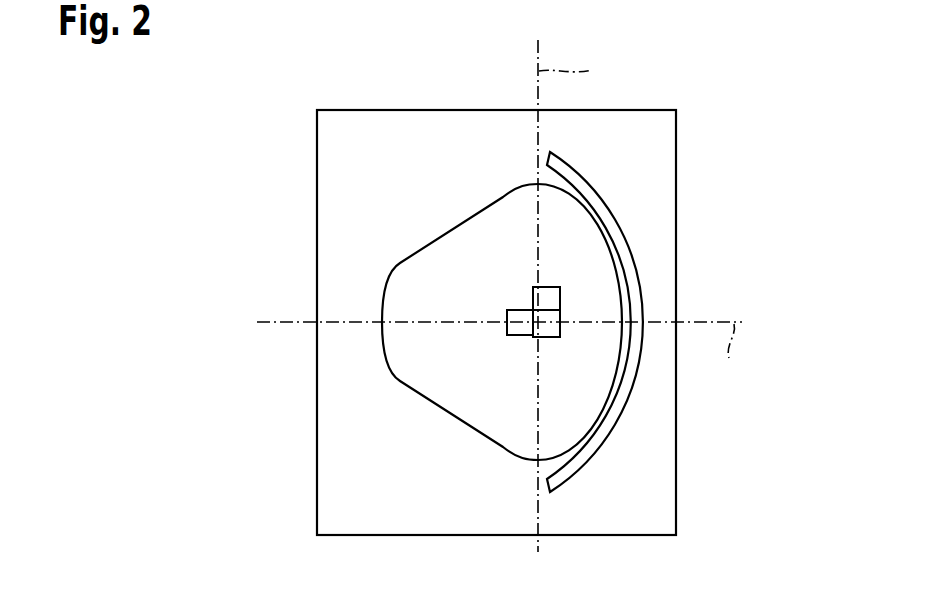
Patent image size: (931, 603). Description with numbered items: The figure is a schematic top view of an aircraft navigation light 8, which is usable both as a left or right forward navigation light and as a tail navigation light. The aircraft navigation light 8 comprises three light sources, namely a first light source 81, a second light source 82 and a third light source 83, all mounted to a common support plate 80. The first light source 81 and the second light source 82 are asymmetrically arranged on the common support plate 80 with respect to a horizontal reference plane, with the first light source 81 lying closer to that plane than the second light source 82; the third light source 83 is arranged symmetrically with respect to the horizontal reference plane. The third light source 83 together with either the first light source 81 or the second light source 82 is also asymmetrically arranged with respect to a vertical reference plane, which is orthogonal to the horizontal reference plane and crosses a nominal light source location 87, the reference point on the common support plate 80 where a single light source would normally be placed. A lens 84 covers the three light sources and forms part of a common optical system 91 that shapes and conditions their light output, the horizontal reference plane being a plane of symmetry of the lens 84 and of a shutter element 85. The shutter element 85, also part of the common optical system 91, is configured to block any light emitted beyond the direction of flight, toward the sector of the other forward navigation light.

The aircraft navigation light 8 is at (752, 62).
The common support plate 80 is at (478, 138).
The first light source 81 is at (560, 337).
The second light source 82 is at (551, 287).
The third light source 83 is at (507, 325).
The lens 84 is at (558, 217).
The shutter element 85 is at (623, 250).
The nominal light source location 87 is at (533, 321).
The common optical system 91 is at (756, 182).